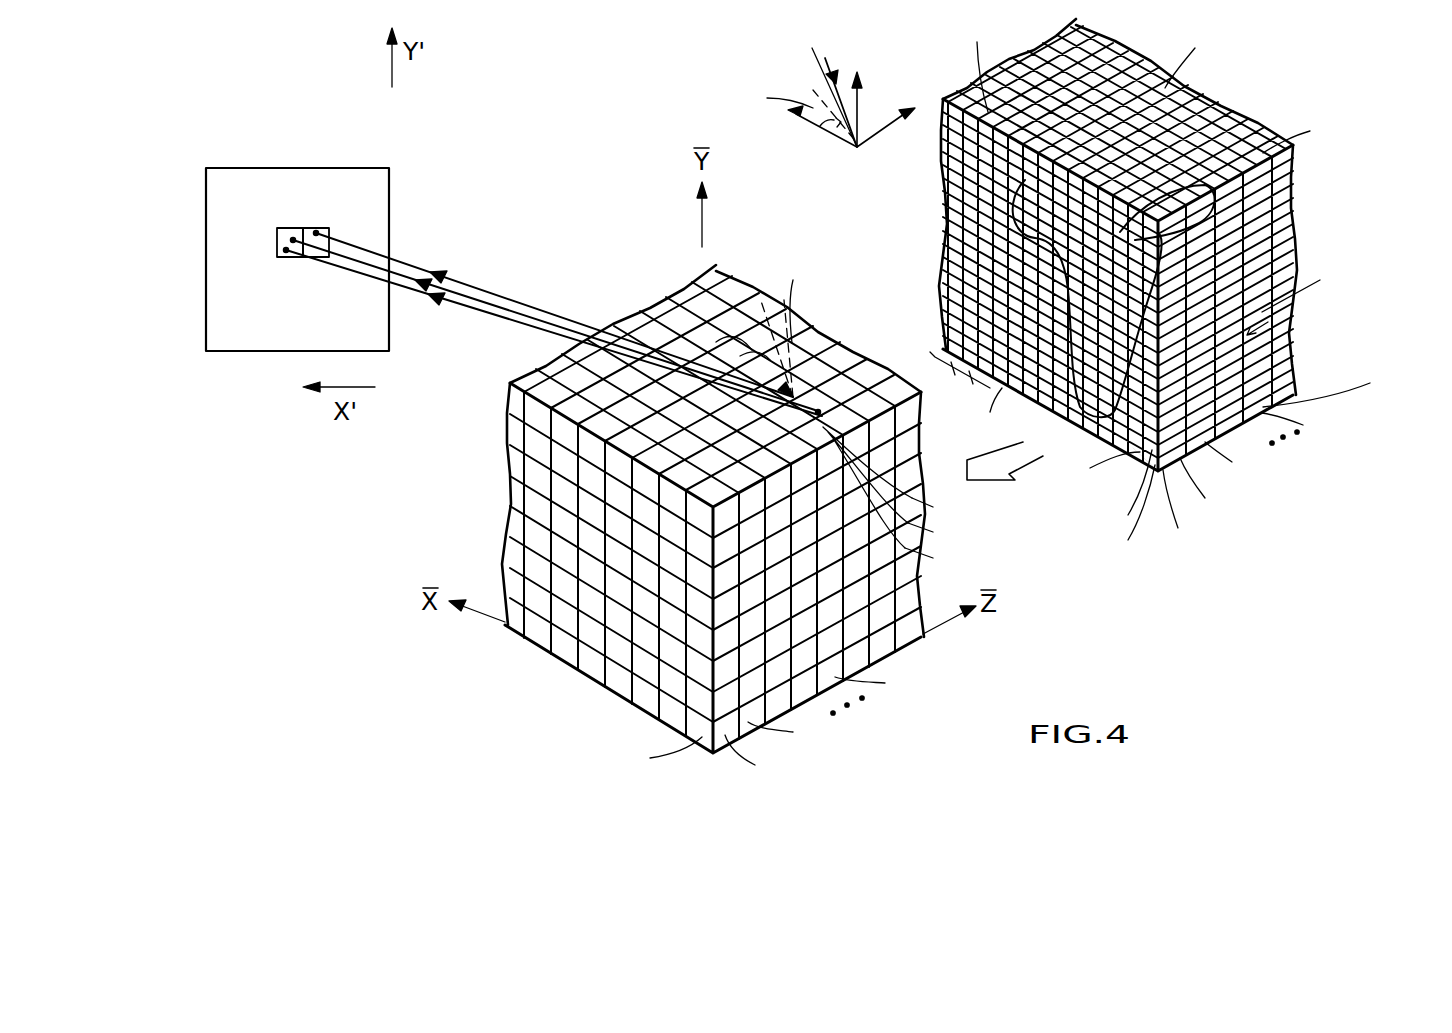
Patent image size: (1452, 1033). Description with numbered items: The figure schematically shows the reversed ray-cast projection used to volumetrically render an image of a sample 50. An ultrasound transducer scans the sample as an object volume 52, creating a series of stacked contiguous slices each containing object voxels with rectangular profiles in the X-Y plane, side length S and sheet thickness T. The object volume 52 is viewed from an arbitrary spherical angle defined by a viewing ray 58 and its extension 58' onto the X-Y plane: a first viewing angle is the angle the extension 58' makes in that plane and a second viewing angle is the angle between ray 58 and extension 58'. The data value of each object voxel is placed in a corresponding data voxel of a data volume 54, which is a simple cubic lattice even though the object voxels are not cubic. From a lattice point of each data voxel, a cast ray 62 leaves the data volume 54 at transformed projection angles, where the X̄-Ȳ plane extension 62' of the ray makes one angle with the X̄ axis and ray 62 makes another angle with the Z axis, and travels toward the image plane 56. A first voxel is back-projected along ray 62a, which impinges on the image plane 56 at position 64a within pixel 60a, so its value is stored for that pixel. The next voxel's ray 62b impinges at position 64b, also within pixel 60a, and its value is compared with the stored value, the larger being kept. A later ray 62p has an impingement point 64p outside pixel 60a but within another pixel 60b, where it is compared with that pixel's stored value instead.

The sample 50 is at (1133, 448).
The object volume 52 is at (938, 199).
The data volume 54 is at (843, 343).
The image plane 56 is at (226, 168).
The viewing ray 58 is at (853, 81).
The extension of viewing ray 58' is at (794, 83).
The image plane pixel 60a is at (283, 228).
The image plane pixel 60b is at (315, 228).
The cast ray 62 is at (554, 304).
The ray 62a is at (520, 323).
The ray 62b is at (485, 302).
The ray 62p is at (453, 277).
The extension of projected ray 62' is at (746, 308).
The impingement position 64a is at (285, 250).
The impingement position 64b is at (292, 240).
The impingement point 64p is at (318, 232).